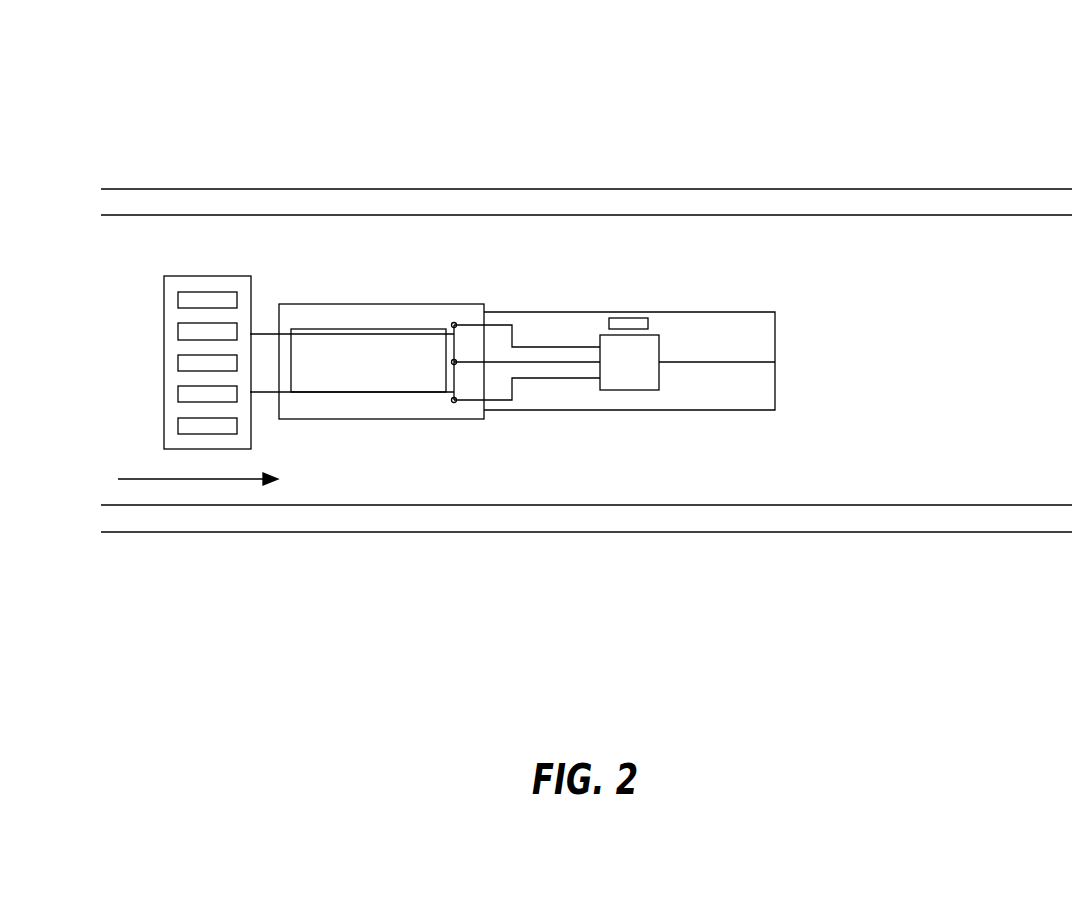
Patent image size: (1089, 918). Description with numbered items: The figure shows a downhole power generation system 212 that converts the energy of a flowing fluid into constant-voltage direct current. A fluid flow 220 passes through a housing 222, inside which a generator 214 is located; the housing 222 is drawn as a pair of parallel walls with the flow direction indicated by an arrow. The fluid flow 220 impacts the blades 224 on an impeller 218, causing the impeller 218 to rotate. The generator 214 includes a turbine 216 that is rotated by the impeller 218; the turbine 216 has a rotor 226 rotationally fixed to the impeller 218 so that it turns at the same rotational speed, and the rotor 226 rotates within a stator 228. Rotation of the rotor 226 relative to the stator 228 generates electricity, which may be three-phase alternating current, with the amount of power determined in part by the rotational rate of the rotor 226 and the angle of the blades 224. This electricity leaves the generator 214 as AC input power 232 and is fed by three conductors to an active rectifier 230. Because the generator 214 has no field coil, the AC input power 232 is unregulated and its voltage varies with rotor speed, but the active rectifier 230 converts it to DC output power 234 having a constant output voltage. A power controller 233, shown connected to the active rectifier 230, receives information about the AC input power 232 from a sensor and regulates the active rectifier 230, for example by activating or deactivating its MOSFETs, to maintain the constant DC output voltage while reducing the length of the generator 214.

The downhole power generation system 212 is at (800, 67).
The generator 214 is at (295, 243).
The turbine 216 is at (272, 275).
The impeller 218 is at (177, 287).
The fluid flow 220 is at (237, 480).
The housing 222 is at (497, 204).
The blades 224 is at (188, 428).
The rotor 226 is at (337, 370).
The stator 228 is at (411, 405).
The active rectifier 230 is at (629, 362).
The AC input power 232 is at (559, 347).
The power controller 233 is at (628, 322).
The DC output power 234 is at (718, 362).